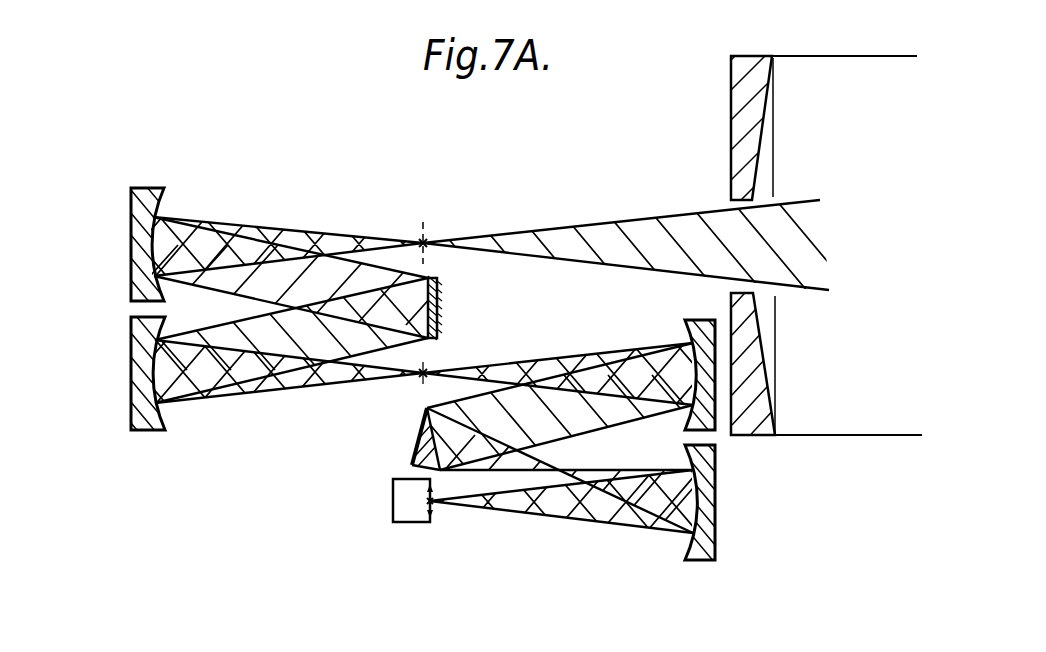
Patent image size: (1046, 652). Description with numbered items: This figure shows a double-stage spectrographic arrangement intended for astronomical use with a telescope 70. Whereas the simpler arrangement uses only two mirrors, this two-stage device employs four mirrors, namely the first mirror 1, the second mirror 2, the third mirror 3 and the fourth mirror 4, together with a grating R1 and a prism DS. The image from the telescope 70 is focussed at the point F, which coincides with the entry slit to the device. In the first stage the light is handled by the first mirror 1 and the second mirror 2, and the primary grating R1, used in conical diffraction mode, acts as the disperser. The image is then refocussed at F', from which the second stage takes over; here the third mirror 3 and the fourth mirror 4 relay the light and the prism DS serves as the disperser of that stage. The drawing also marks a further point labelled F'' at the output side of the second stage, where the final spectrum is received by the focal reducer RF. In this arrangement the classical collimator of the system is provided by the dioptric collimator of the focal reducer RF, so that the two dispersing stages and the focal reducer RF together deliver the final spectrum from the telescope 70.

The first mirror 1 is at (137, 252).
The second mirror 2 is at (142, 402).
The third mirror 3 is at (690, 322).
The fourth mirror 4 is at (707, 553).
The astronomical telescope 70 is at (881, 403).
The primary grating R1 is at (445, 297).
The prism DS is at (418, 433).
The focal reducer RF is at (400, 500).
The focus of the telescope image F is at (430, 235).
The refocus point F' is at (433, 367).
The focal point F'' is at (457, 535).